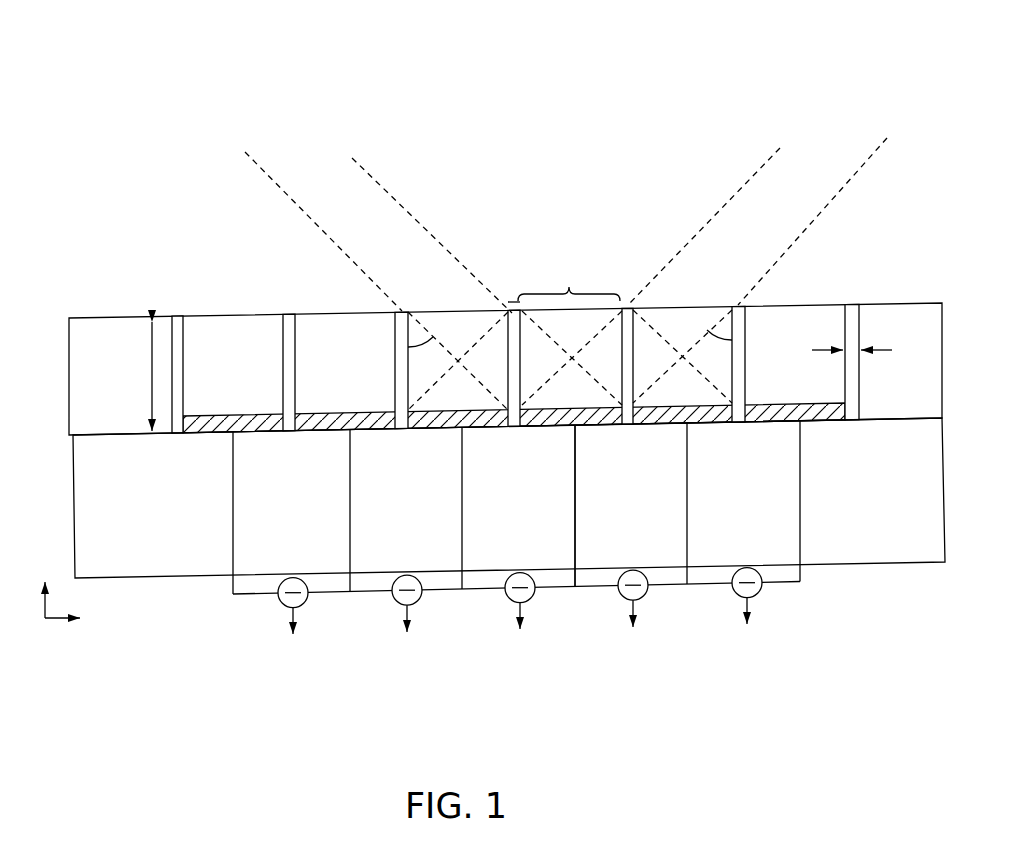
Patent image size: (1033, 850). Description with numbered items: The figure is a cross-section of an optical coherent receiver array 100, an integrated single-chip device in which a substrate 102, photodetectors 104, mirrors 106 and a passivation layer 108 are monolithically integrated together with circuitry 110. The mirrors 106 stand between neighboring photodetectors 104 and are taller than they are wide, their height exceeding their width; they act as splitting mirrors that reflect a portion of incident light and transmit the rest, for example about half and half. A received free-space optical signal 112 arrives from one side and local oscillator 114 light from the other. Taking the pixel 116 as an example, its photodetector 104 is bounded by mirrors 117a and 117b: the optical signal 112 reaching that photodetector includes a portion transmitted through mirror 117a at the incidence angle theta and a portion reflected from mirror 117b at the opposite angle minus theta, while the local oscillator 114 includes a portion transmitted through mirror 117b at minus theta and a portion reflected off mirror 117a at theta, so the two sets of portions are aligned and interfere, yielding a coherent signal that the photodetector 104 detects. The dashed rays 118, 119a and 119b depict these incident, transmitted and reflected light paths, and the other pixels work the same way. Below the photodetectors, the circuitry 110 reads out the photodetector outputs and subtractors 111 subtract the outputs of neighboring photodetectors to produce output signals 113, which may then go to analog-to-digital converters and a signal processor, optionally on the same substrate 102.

The optical coherent receiver array 100 is at (105, 74).
The substrate 102 is at (142, 576).
The photodetectors 104 is at (268, 409).
The mirrors 106 is at (196, 340).
The passivation layer 108 is at (132, 319).
The circuitry 110 is at (656, 628).
The subtractors 111 is at (278, 602).
The optical signal 112 is at (313, 160).
The output signals 113 is at (300, 624).
The local oscillator 114 is at (814, 148).
The pixel 116 is at (569, 278).
The mirror 117a is at (514, 426).
The mirror 117b is at (628, 425).
The signal ray 118 is at (434, 236).
The ray 119a is at (510, 301).
The ray 119b is at (560, 350).